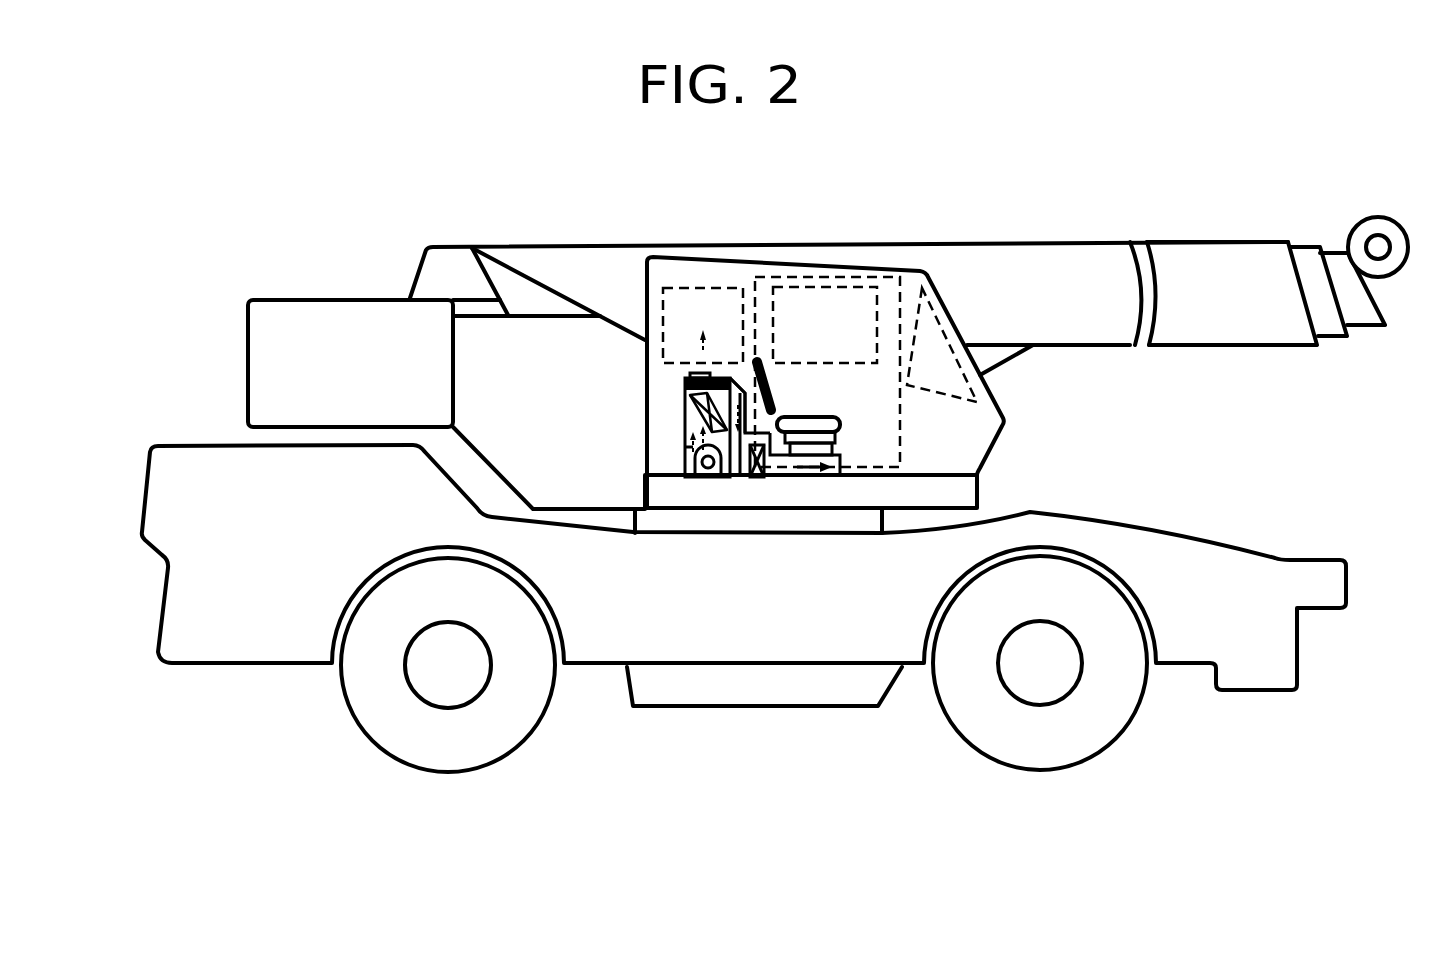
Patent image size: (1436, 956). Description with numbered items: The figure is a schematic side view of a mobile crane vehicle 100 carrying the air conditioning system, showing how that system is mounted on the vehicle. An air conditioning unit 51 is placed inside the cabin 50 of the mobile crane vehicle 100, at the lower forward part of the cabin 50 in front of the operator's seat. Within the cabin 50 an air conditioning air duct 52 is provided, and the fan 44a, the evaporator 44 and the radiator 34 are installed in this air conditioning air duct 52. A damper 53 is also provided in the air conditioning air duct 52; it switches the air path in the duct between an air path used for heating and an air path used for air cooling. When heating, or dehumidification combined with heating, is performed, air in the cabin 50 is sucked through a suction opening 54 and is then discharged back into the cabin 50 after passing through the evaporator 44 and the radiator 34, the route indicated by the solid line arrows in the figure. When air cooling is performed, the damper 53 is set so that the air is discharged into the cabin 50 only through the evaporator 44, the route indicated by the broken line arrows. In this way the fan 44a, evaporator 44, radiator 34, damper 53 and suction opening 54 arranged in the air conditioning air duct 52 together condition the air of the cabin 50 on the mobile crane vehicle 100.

The mobile crane vehicle 100 is at (763, 236).
The cabin 50 is at (903, 270).
The evaporator 44 is at (687, 393).
The fan 44a is at (707, 478).
The air conditioning unit 51 is at (688, 387).
The air conditioning air duct 52 is at (693, 430).
The damper 53 is at (736, 393).
The suction opening 54 is at (687, 462).
The radiator 34 is at (757, 478).